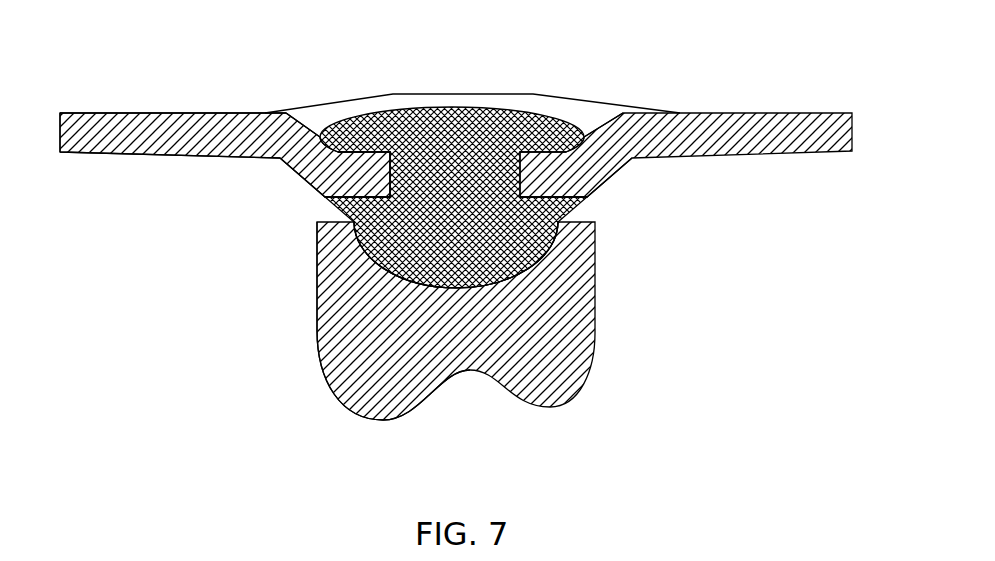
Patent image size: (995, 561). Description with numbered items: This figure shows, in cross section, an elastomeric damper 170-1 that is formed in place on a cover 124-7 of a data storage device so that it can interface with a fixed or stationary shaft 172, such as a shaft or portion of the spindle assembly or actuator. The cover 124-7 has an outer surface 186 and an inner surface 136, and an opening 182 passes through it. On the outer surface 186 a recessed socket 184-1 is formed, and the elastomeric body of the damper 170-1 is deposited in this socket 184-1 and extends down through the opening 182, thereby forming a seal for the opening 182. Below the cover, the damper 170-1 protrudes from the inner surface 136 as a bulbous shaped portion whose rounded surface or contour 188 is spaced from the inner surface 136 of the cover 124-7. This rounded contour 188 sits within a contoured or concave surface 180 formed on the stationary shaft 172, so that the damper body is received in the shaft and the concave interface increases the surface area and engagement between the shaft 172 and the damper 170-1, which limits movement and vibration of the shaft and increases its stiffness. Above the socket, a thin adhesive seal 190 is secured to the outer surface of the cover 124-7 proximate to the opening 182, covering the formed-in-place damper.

The cover 124-7 is at (855, 132).
The outer surface 186 is at (135, 113).
The inner surface 136 is at (291, 168).
The opening 182 is at (390, 148).
The recessed socket 184-1 is at (585, 136).
The adhesive seal 190 is at (412, 93).
The elastomeric damper 170-1 is at (473, 135).
The concave surface 180 is at (548, 252).
The stationary shaft 172 is at (548, 333).
The rounded surface 188 is at (362, 303).